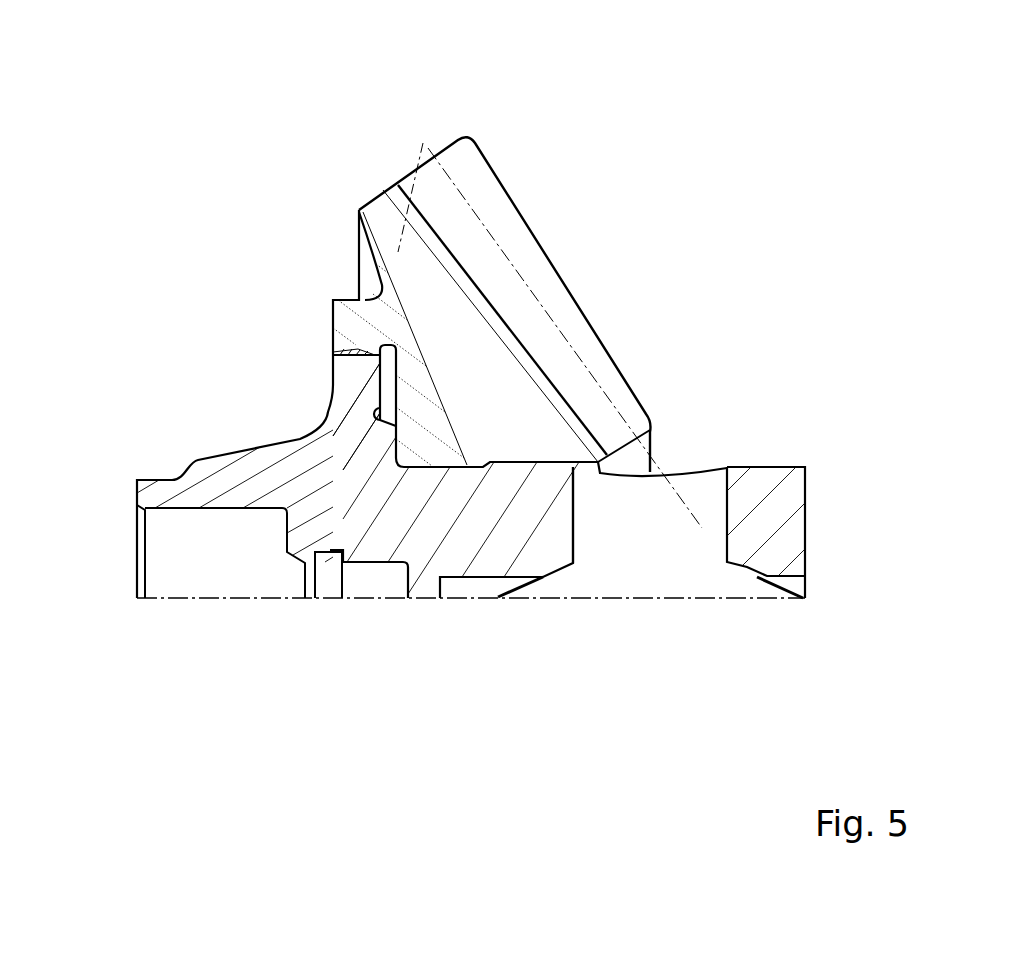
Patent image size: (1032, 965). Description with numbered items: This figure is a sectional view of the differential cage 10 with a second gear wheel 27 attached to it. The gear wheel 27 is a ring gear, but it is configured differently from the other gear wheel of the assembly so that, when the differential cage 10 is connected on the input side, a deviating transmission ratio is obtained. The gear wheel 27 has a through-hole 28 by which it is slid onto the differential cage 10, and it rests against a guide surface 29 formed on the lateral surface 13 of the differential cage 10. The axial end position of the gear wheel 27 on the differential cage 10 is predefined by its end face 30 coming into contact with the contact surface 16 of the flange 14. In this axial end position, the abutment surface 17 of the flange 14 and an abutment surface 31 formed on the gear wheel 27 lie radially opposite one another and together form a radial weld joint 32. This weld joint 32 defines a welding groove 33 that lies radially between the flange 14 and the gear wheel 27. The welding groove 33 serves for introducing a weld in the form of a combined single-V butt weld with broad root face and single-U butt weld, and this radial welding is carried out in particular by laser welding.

The differential cage 10 is at (167, 497).
The lateral surface 13 is at (536, 349).
The flange 14 is at (360, 398).
The contact surface 16 is at (500, 343).
The abutment surface 17 is at (333, 343).
The gear wheel 27 is at (440, 378).
The through-hole 28 is at (539, 467).
The guide surface 29 is at (452, 472).
The end face 30 is at (407, 440).
The abutment surface 31 is at (440, 378).
The radial weld joint 32 is at (330, 358).
The welding groove 33 is at (327, 347).